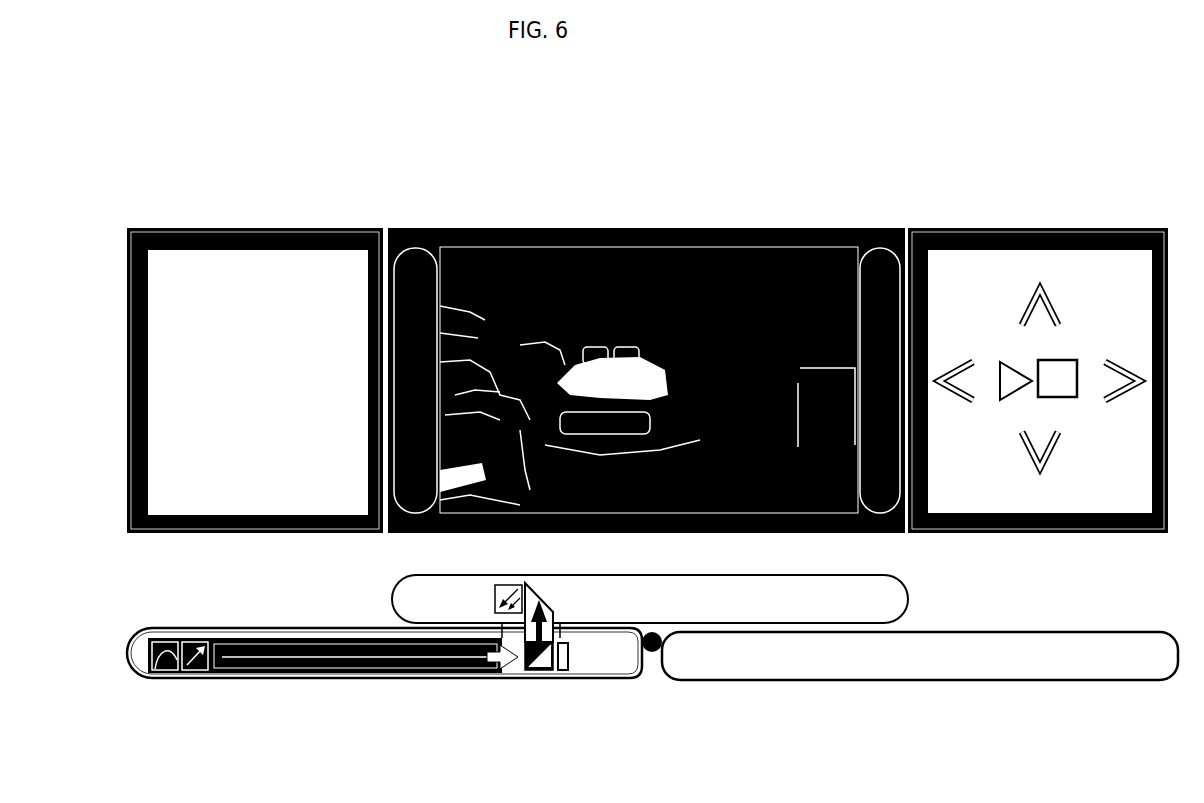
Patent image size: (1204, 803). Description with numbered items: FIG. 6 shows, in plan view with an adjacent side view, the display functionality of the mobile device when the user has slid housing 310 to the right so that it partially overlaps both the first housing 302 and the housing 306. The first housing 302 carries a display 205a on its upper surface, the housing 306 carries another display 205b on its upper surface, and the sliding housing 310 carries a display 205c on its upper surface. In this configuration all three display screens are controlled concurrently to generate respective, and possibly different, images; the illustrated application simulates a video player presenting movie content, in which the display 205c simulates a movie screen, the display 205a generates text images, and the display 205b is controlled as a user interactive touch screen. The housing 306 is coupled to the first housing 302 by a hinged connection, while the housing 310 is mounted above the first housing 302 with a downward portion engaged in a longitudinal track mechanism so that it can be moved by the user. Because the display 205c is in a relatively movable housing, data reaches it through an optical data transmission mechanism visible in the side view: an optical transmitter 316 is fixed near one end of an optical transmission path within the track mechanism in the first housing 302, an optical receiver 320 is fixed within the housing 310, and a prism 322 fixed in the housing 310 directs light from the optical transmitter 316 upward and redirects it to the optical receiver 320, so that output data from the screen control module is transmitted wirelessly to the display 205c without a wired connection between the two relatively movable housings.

The display 205a is at (290, 268).
The display 205b is at (950, 272).
The display 205c is at (512, 247).
The first housing 302 is at (596, 662).
The housing 306 is at (885, 665).
The housing 310 is at (885, 596).
The optical transmitter 316 is at (192, 677).
The optical receiver 320 is at (495, 588).
The prism 322 is at (533, 672).